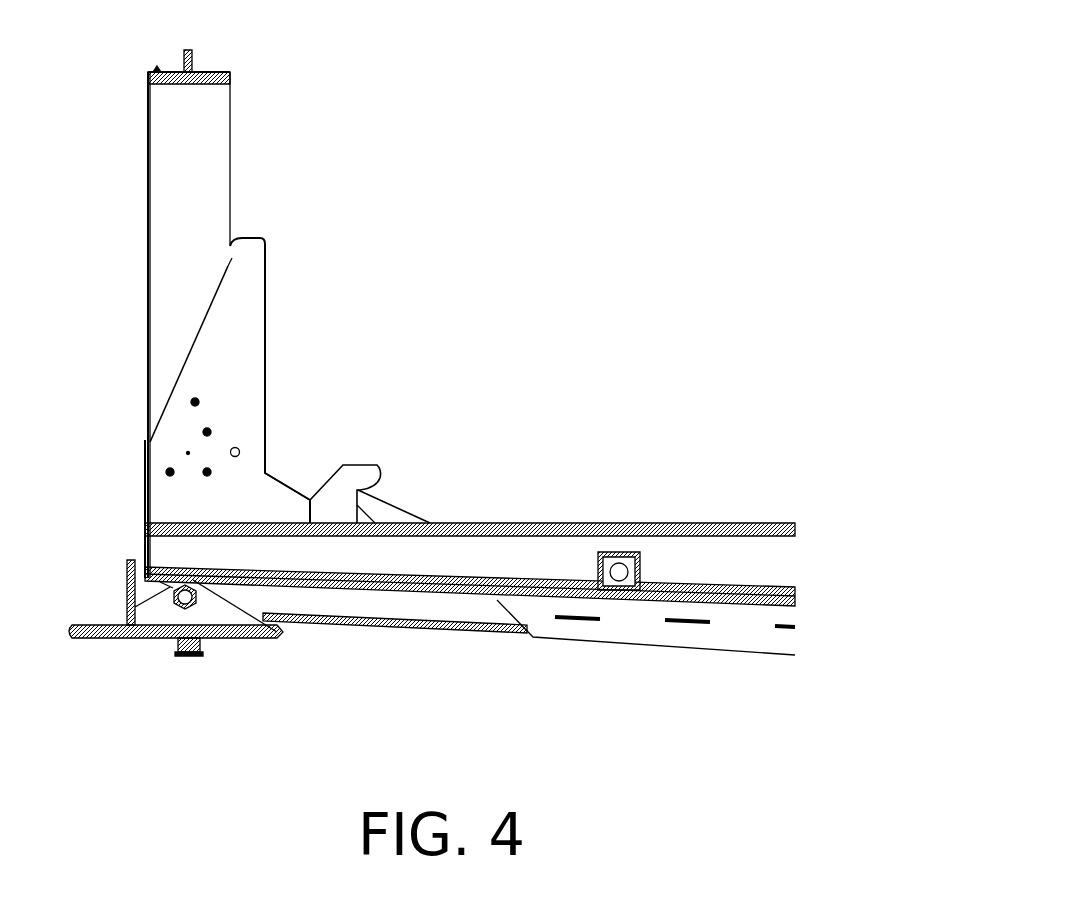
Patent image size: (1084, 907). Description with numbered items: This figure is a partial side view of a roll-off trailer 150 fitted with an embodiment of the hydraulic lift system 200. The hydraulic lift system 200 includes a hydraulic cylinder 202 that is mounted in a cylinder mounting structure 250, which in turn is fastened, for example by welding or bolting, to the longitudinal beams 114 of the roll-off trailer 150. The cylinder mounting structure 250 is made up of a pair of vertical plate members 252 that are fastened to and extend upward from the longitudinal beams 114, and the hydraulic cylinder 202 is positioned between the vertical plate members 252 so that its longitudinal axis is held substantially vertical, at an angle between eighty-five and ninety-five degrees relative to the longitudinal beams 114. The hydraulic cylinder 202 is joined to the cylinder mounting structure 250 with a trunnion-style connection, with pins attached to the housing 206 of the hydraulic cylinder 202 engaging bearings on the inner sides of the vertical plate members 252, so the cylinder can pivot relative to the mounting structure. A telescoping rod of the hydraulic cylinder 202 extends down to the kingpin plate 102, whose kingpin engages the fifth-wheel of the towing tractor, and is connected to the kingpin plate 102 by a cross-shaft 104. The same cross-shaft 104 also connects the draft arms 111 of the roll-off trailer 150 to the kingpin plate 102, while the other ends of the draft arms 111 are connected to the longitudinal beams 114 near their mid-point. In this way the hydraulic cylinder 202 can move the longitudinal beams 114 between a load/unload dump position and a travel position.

The hydraulic lift system 200 is at (318, 129).
The hydraulic cylinder 202 is at (218, 72).
The housing 206 is at (170, 224).
The cylinder mounting structure 250 is at (292, 283).
The vertical plate members 252 is at (244, 345).
The longitudinal beams 114 is at (507, 547).
The roll-off trailer 150 is at (752, 507).
The draft arms 111 is at (455, 605).
The kingpin plate 102 is at (94, 630).
The cross-shaft 104 is at (183, 585).